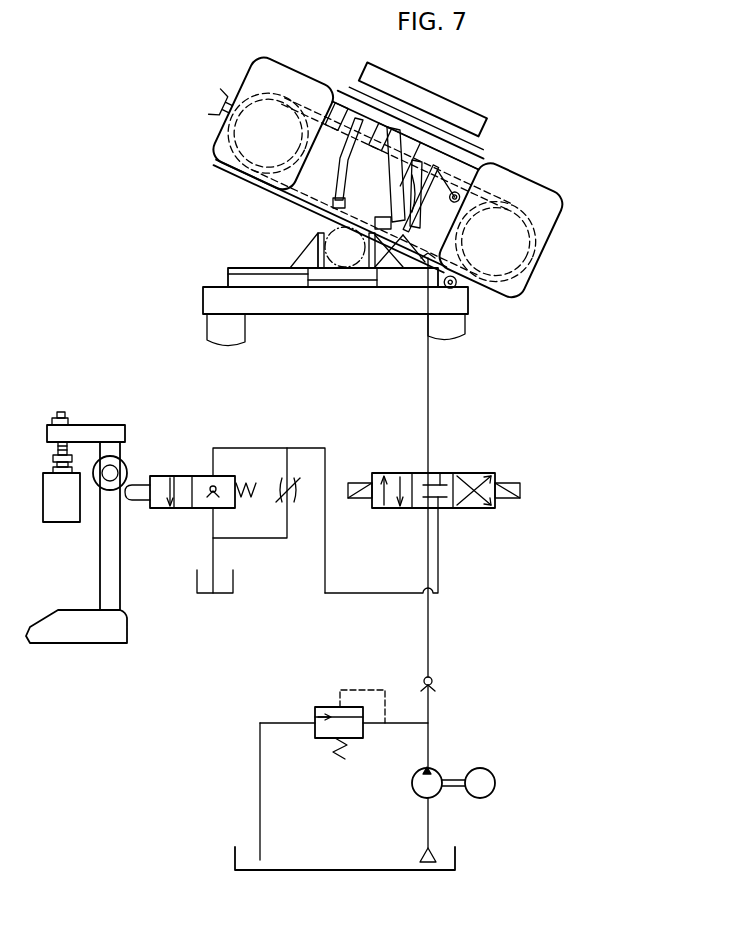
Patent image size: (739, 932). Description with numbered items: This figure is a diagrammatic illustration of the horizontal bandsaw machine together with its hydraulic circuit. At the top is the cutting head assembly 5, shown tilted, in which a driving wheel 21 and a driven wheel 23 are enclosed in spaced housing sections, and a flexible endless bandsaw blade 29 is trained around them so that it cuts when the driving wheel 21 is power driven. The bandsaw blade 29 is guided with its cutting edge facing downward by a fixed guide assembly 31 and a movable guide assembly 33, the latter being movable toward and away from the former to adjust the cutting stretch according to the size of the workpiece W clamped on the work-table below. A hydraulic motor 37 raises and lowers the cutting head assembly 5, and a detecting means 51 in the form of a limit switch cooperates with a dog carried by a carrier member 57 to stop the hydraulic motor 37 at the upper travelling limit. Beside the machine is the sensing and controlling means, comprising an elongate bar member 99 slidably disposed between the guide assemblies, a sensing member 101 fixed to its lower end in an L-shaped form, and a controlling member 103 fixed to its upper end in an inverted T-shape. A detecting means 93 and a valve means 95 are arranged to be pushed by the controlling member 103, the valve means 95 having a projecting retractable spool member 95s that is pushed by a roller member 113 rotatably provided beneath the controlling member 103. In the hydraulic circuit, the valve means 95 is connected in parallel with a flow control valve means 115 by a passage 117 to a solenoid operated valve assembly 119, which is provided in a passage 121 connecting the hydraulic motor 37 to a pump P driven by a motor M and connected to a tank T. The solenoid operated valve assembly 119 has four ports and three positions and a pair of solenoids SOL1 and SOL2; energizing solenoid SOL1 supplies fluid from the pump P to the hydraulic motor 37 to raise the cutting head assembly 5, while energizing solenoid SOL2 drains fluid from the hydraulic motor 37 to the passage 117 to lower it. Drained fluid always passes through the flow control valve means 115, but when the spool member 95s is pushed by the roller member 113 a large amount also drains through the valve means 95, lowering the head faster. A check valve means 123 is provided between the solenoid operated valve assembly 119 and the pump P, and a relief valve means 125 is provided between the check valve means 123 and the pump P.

The cutting head assembly 5 is at (317, 60).
The driving wheel 21 is at (548, 233).
The driven wheel 23 is at (218, 137).
The bandsaw blade 29 is at (290, 194).
The fixed guide assembly 31 is at (440, 173).
The movable guide assembly 33 is at (376, 118).
The hydraulic motor 37 is at (410, 256).
The detecting means 51 is at (410, 232).
The carrier member 57 is at (455, 229).
The elongate bar member 99 is at (388, 187).
The detecting means 93 is at (52, 519).
The valve means 95 is at (177, 466).
The spool member 95s is at (137, 500).
The sensing member 101 is at (68, 642).
The controlling member 103 is at (88, 425).
The roller member 113 is at (128, 466).
The flow control valve means 115 is at (294, 482).
The passage 117 is at (347, 600).
The solenoid operated valve assembly 119 is at (454, 462).
The passage 121 is at (430, 619).
The check valve means 123 is at (434, 682).
The relief valve means 125 is at (322, 739).
The workpiece W is at (326, 232).
The tank T is at (223, 598).
The pump P is at (438, 814).
The motor M is at (480, 783).
The solenoid SOL1 is at (353, 482).
The solenoid SOL2 is at (522, 483).